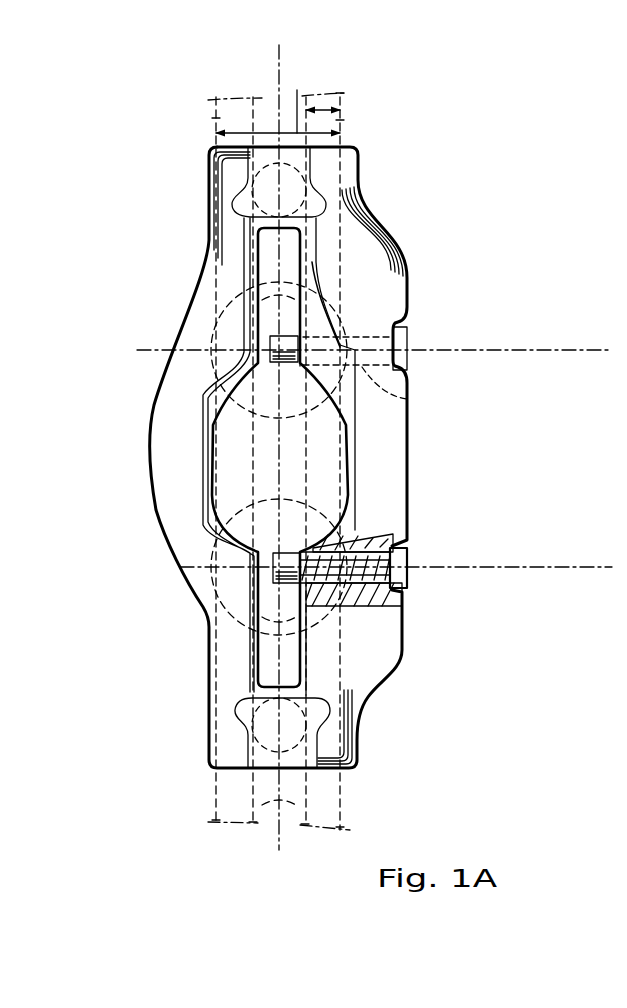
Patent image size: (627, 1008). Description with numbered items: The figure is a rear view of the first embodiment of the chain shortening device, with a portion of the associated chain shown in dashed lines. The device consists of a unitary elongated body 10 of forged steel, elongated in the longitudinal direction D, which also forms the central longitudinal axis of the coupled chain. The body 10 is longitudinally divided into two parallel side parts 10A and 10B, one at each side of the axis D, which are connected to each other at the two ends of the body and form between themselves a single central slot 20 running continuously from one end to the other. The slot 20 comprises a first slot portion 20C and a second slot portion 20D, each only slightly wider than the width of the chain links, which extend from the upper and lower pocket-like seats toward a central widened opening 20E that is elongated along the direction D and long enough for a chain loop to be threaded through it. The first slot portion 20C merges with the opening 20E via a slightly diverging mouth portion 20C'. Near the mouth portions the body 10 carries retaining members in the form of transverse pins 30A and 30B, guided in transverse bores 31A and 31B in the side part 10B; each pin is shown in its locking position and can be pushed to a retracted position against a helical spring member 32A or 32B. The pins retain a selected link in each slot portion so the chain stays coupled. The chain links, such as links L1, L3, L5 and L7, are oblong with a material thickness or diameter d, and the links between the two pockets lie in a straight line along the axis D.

The elongated body 10 is at (181, 291).
The first side part 10A is at (216, 247).
The second side part 10B is at (368, 225).
The central slot 20 is at (273, 680).
The first slot portion 20C is at (178, 342).
The first mouth portion 20C' is at (177, 373).
The second slot portion 20D is at (276, 561).
The central opening 20E is at (222, 483).
The first transverse pin 30A is at (350, 342).
The second transverse pin 30B is at (294, 548).
The first transverse bore 31A is at (362, 330).
The second transverse bore 31B is at (326, 612).
The first helical spring member 32A is at (407, 399).
The second helical spring member 32B is at (394, 541).
The longitudinal direction D is at (281, 72).
The material thickness or diameter d is at (336, 99).
The chain link L1 is at (232, 118).
The chain link L3 is at (226, 313).
The chain link L5 is at (222, 606).
The chain link L7 is at (232, 799).